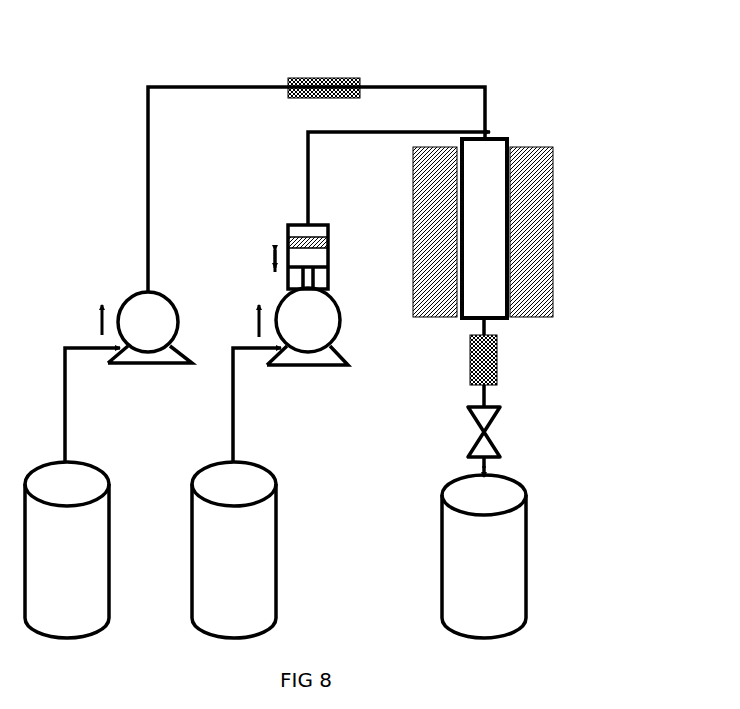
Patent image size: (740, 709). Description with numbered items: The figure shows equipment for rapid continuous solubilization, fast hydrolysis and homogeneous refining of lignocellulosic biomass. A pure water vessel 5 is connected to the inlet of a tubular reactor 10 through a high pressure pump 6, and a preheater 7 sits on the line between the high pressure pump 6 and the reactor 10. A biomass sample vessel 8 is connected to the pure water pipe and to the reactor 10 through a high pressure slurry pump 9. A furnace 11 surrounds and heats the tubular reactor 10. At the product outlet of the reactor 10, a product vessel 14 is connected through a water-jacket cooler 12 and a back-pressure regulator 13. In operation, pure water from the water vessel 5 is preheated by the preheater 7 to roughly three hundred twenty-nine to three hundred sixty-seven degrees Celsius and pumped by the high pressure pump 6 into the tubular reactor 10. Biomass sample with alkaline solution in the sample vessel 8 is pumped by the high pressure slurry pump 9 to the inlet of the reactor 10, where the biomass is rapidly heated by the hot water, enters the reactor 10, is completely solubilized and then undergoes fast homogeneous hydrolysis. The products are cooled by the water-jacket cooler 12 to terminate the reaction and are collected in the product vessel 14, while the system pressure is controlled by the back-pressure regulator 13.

The pure water vessel 5 is at (67, 550).
The high pressure pump 6 is at (150, 327).
The preheater 7 is at (324, 74).
The biomass sample vessel 8 is at (234, 550).
The high pressure slurry pump 9 is at (307, 295).
The tubular reactor 10 is at (484, 228).
The furnace 11 is at (501, 232).
The water-jacket cooler 12 is at (498, 360).
The back-pressure regulator 13 is at (497, 432).
The product vessel 14 is at (484, 556).